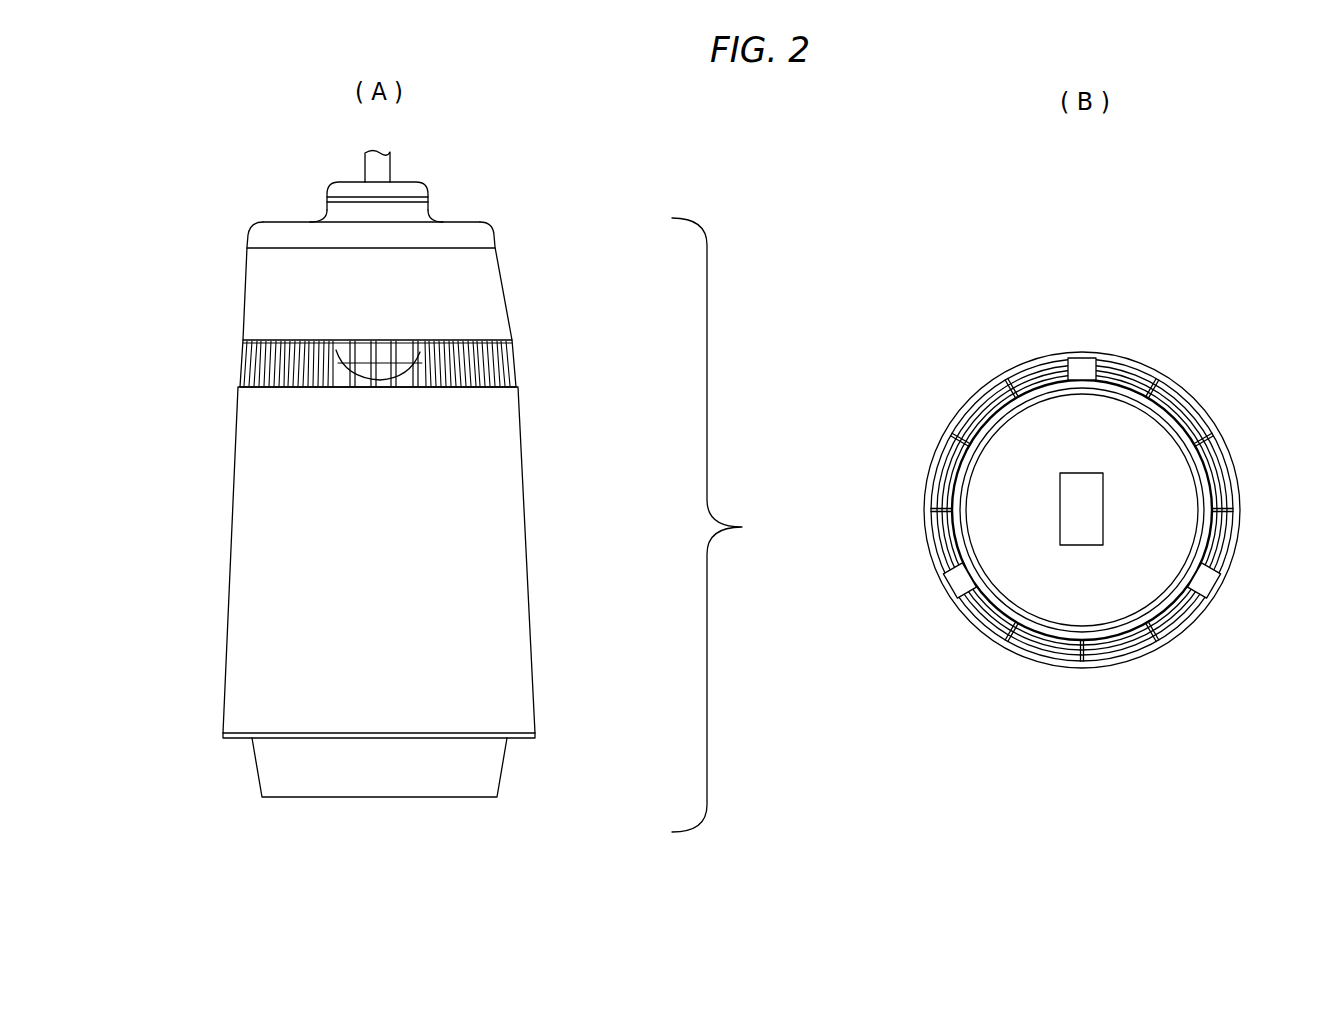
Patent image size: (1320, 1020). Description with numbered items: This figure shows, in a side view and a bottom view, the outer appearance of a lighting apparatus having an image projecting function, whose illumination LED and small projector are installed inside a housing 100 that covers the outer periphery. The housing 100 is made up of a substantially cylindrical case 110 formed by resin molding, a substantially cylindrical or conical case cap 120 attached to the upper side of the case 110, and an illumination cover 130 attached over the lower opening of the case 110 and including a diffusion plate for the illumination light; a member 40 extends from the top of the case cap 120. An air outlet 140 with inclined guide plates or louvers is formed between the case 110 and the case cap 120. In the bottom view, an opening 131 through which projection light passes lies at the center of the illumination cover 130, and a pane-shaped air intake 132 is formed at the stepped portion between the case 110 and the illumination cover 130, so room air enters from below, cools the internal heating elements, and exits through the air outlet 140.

The cable / lead 40 is at (388, 167).
The housing 100 is at (731, 525).
The case 110 is at (530, 575).
The case cap 120 is at (495, 288).
The illumination cover 130 is at (490, 773).
The opening 131 is at (1080, 510).
The air intake 132 is at (240, 738).
The air outlet 140 is at (378, 363).